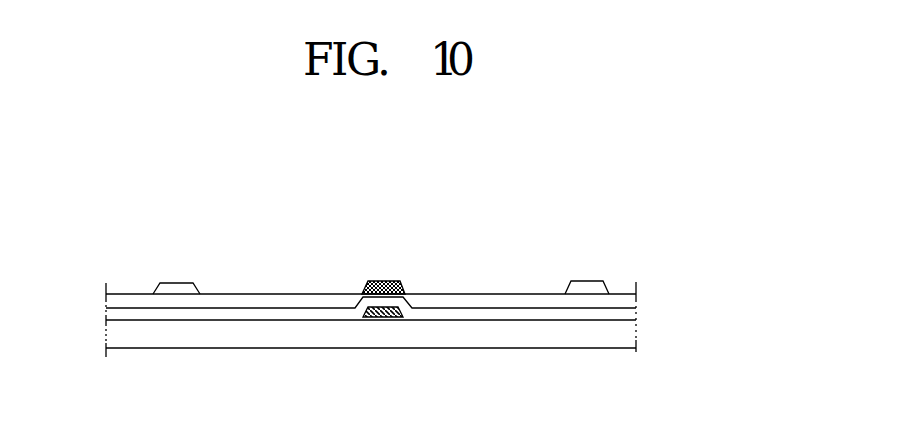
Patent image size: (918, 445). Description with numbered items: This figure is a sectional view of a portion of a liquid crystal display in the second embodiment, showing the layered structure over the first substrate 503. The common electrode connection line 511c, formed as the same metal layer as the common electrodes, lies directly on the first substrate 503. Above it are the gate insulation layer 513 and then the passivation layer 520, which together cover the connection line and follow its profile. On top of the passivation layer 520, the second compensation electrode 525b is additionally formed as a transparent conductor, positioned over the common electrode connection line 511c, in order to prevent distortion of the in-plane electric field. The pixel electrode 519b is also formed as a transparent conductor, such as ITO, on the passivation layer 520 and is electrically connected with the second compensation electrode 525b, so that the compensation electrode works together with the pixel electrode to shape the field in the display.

The pixel electrode 519b is at (179, 289).
The second compensation electrode 525b is at (383, 281).
The common electrode connection line 511c is at (383, 318).
The passivation layer 520 is at (636, 294).
The gate insulation layer 513 is at (636, 310).
The first substrate 503 is at (636, 327).